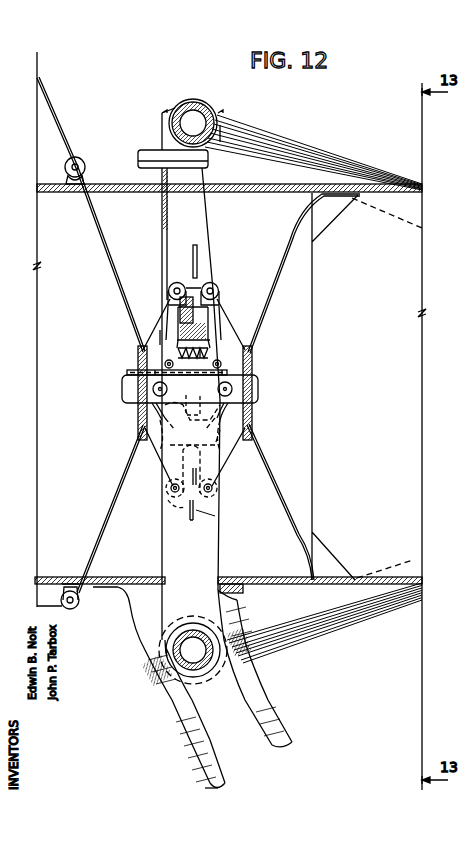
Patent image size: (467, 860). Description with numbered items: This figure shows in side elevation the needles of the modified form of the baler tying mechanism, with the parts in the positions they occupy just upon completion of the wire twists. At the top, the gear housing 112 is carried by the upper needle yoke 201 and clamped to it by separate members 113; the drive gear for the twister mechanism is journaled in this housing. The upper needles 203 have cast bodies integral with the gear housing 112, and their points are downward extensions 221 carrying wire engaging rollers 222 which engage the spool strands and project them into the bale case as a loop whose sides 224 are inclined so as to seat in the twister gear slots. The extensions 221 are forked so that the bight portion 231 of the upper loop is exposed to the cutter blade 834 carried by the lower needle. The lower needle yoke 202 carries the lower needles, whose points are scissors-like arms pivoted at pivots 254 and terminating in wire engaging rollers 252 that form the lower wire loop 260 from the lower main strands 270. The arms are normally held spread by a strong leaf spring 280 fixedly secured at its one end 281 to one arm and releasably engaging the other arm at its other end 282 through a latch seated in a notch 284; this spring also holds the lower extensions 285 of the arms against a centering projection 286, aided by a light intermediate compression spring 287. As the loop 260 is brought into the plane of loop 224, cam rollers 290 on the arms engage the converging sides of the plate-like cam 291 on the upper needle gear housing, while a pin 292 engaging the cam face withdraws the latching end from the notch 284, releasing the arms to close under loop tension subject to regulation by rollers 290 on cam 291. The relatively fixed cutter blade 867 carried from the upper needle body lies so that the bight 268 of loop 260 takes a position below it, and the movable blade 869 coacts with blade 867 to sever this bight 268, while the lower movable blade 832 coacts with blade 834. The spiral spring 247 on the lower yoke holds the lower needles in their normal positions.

The separate members 113 is at (178, 105).
The gear housing 112 is at (138, 162).
The upper needle yoke 201 is at (300, 146).
The upper needles 203 is at (198, 216).
The spiral spring 247 is at (212, 678).
The lower needle yoke 202 is at (313, 637).
The sides of upper wire loop 224 is at (103, 240).
The lower wire loop 260 is at (100, 534).
The lower main strands 270 is at (68, 607).
The upper movable cutter blade 869 is at (198, 258).
The wire engaging rollers 252 is at (184, 290).
The bight of lower loop 268 is at (213, 282).
The relatively fixed cutter blade 867 is at (180, 310).
The notch 284 is at (152, 338).
The plate-like cam 291 is at (176, 350).
The intermediate compression spring 287 is at (200, 348).
The cam rollers 290 is at (163, 361).
The leaf spring 280 is at (148, 371).
The other end of leaf spring 282 is at (127, 373).
The one end of leaf spring 281 is at (230, 374).
The pivots 254 is at (232, 393).
The pin 292 is at (230, 418).
The lower extensions 285 is at (160, 419).
The centering projection 286 is at (226, 441).
The downward extensions 221 is at (170, 467).
The wire engaging rollers 222 is at (169, 494).
The lower movable cutter blade 832 is at (206, 472).
The bight portion of upper loop 231 is at (178, 509).
The cutter blade 834 is at (205, 519).